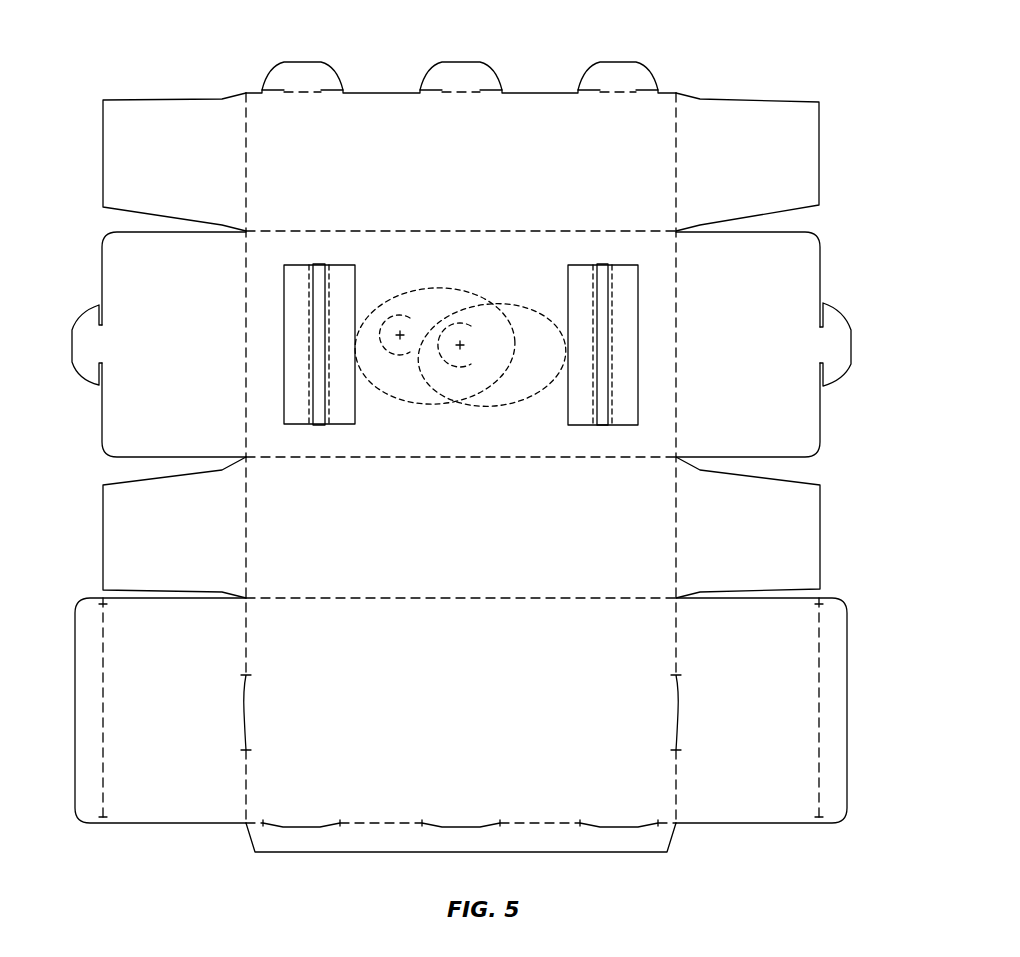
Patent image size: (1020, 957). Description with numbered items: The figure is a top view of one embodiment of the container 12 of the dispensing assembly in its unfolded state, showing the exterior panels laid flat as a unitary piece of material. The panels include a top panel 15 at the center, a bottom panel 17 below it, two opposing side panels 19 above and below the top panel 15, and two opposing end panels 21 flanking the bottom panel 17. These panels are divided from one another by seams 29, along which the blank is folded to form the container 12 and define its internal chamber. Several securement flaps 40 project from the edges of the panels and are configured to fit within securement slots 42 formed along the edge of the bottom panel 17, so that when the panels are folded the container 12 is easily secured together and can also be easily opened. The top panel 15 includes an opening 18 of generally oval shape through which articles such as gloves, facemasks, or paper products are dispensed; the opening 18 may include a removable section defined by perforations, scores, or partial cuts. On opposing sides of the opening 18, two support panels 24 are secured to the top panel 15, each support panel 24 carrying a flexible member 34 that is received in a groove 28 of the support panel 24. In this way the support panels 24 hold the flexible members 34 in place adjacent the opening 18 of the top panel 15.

The container 12 is at (215, 88).
The top panel 15 is at (486, 278).
The bottom panel 17 is at (455, 718).
The opening 18 is at (520, 302).
The side panels 19 is at (469, 168).
The end panels 21 is at (180, 718).
The support panel 24 is at (282, 398).
The groove 28 is at (330, 283).
The seams 29 is at (676, 160).
The flexible member 34 is at (319, 275).
The securement flaps 40 is at (300, 75).
The securement slots 42 is at (293, 827).